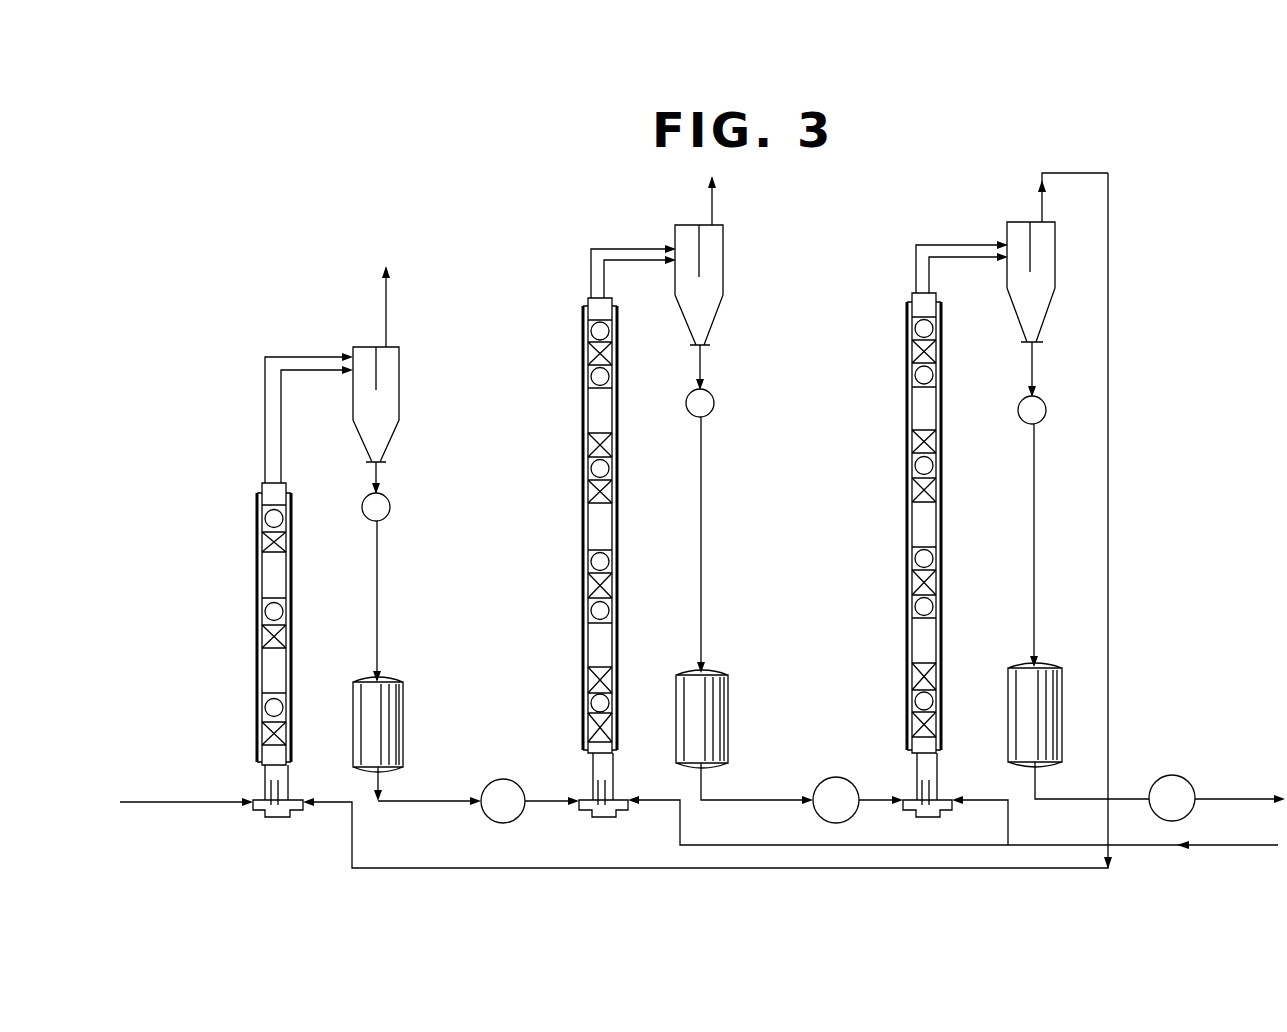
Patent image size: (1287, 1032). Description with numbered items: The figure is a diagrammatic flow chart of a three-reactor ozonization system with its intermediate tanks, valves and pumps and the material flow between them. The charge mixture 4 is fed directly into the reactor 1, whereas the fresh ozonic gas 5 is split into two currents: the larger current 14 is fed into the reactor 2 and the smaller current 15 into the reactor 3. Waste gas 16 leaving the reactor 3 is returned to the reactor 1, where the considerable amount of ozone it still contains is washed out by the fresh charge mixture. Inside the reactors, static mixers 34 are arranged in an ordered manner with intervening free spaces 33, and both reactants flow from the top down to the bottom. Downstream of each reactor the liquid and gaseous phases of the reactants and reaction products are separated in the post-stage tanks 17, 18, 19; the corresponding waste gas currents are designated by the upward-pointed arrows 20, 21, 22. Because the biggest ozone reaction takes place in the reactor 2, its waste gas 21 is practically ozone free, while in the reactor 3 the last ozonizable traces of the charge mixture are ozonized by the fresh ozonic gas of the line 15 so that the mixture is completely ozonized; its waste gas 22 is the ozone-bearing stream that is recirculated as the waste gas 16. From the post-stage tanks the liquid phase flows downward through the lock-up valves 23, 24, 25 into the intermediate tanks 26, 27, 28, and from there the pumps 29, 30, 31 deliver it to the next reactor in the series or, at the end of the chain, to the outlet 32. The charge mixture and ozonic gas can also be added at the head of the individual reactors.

The reactor 1 is at (282, 816).
The reactor 2 is at (604, 547).
The reactor 3 is at (930, 813).
The charge mixture 4 is at (185, 805).
The ozonic gas 5 is at (1230, 848).
The larger current 14 is at (722, 845).
The smaller current 15 is at (1010, 822).
The waste gas 16 is at (1109, 452).
The post-stage tank 17 is at (400, 394).
The post-stage tank 18 is at (724, 284).
The post-stage tank 19 is at (1012, 278).
The waste gas current 20 is at (387, 312).
The waste gas current 21 is at (716, 213).
The waste gas current 22 is at (1040, 205).
The lock-up valve 23 is at (391, 507).
The lock-up valve 24 is at (715, 403).
The lock-up valve 25 is at (1020, 420).
The intermediate tank 26 is at (404, 717).
The intermediate tank 27 is at (729, 708).
The intermediate tank 28 is at (1048, 680).
The pump 29 is at (511, 780).
The pump 30 is at (846, 779).
The pump 31 is at (1188, 760).
The outlet 32 is at (1206, 800).
The free space 33 is at (597, 521).
The static mixer 34 is at (590, 612).